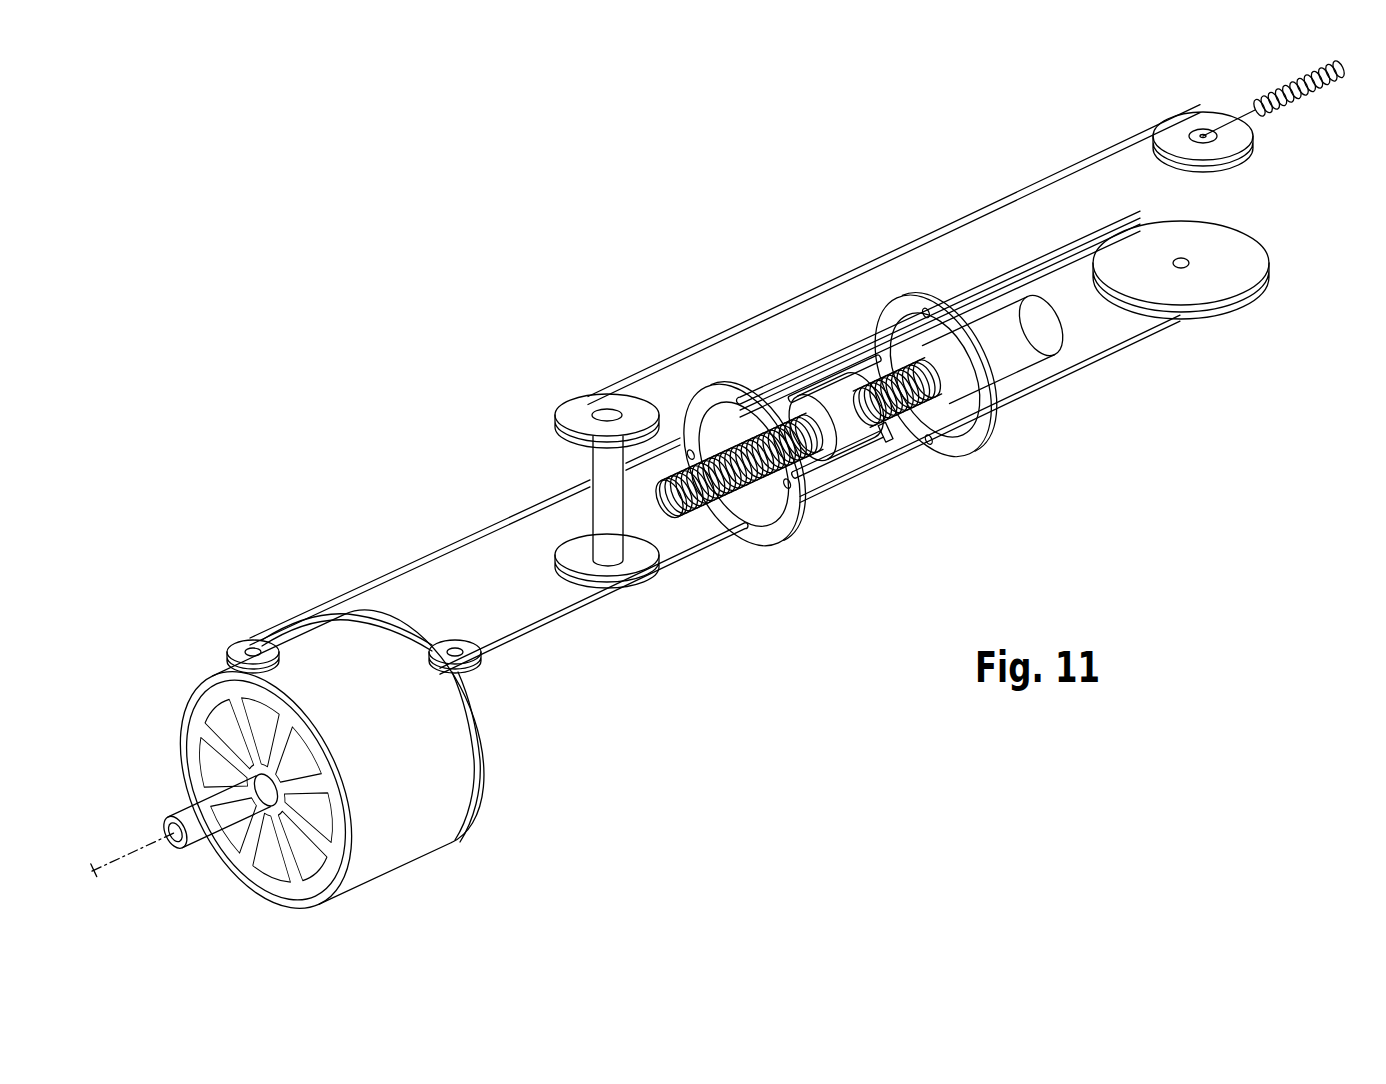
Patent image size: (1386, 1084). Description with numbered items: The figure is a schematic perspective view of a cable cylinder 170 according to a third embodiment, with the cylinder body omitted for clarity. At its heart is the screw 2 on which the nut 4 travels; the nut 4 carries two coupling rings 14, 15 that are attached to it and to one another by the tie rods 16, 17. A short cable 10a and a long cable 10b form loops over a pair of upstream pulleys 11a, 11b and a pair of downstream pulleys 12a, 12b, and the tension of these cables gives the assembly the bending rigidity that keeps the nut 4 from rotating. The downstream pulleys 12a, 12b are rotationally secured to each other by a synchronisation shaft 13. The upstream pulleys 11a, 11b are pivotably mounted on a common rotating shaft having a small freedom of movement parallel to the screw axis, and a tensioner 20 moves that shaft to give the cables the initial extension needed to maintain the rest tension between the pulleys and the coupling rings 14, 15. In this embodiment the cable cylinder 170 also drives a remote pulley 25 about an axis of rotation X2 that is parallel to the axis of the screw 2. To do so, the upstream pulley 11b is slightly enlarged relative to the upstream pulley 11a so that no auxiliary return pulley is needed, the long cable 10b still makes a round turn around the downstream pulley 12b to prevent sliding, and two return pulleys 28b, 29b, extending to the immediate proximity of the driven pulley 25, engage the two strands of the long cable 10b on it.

The cable cylinder 170 is at (680, 278).
The screw 2 is at (885, 362).
The nut 4 is at (858, 455).
The short cable 10a is at (847, 273).
The long cable 10b is at (1087, 385).
The upstream pulley 11a is at (1240, 138).
The upstream pulley 11b is at (1255, 265).
The downstream pulley 12a is at (586, 405).
The downstream pulley 12b is at (620, 570).
The synchronisation shaft 13 is at (598, 505).
The coupling ring 14 is at (783, 530).
The coupling ring 15 is at (975, 447).
The tie rod 16 is at (778, 407).
The tie rod 17 is at (860, 370).
The tensioner 20 is at (1328, 88).
The remote pulley 25 is at (380, 866).
The return pulley 28b is at (466, 645).
The return pulley 29b is at (248, 641).
The axis of rotation X2 is at (113, 910).